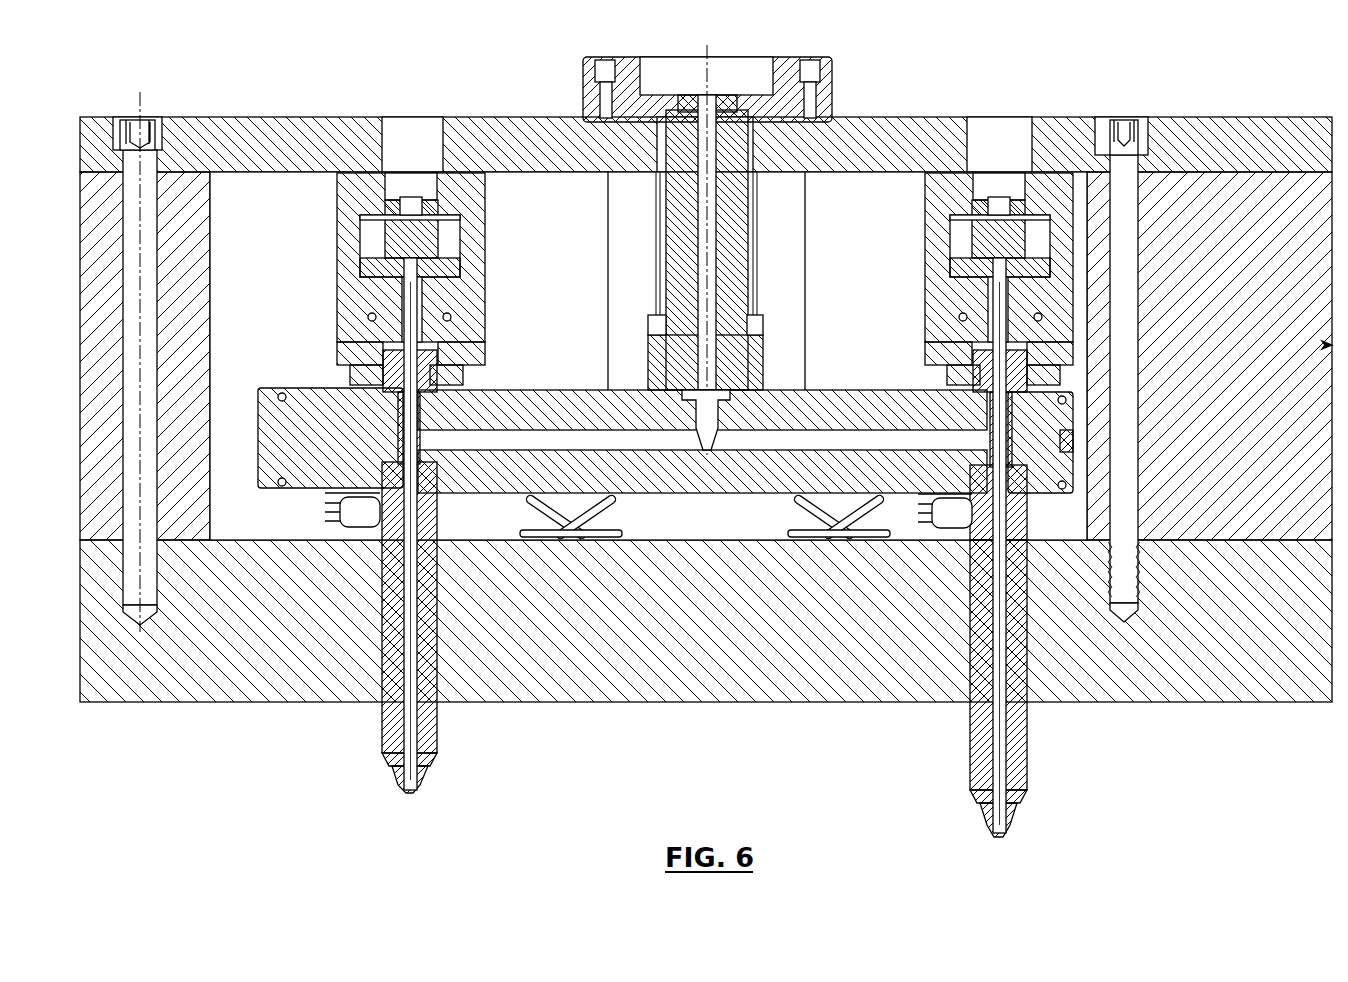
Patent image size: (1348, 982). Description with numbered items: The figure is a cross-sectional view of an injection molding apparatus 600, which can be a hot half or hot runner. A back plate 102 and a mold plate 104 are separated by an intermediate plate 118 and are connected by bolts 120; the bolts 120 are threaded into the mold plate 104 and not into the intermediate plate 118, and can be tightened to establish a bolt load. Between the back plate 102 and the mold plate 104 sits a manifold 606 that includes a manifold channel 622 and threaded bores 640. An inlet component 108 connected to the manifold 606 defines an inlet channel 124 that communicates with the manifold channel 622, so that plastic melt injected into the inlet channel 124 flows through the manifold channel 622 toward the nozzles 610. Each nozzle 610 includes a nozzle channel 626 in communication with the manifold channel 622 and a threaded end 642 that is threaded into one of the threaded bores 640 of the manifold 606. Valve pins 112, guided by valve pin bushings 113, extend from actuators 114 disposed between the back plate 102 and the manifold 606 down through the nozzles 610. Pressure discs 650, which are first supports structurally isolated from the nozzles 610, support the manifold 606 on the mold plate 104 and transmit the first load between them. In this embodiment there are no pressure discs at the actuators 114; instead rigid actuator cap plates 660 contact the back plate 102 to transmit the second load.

The injection molding apparatus 600 is at (1123, 78).
The back plate 102 is at (1245, 160).
The mold plate 104 is at (1245, 643).
The intermediate plate 118 is at (1245, 443).
The bolts 120 is at (1113, 165).
The inlet channel 124 is at (700, 228).
The inlet component 108 is at (738, 253).
The rigid actuator cap plates 660 is at (937, 192).
The actuators 114 is at (940, 292).
The valve pin bushings 113 is at (952, 383).
The manifold 606 is at (830, 392).
The manifold channel 622 is at (531, 440).
The threaded ends 642 is at (1035, 487).
The threaded bores 640 is at (967, 480).
The nozzle channels 626 is at (990, 681).
The valve pins 112 is at (1000, 718).
The nozzles 610 is at (1020, 742).
The pressure discs 650 is at (580, 540).